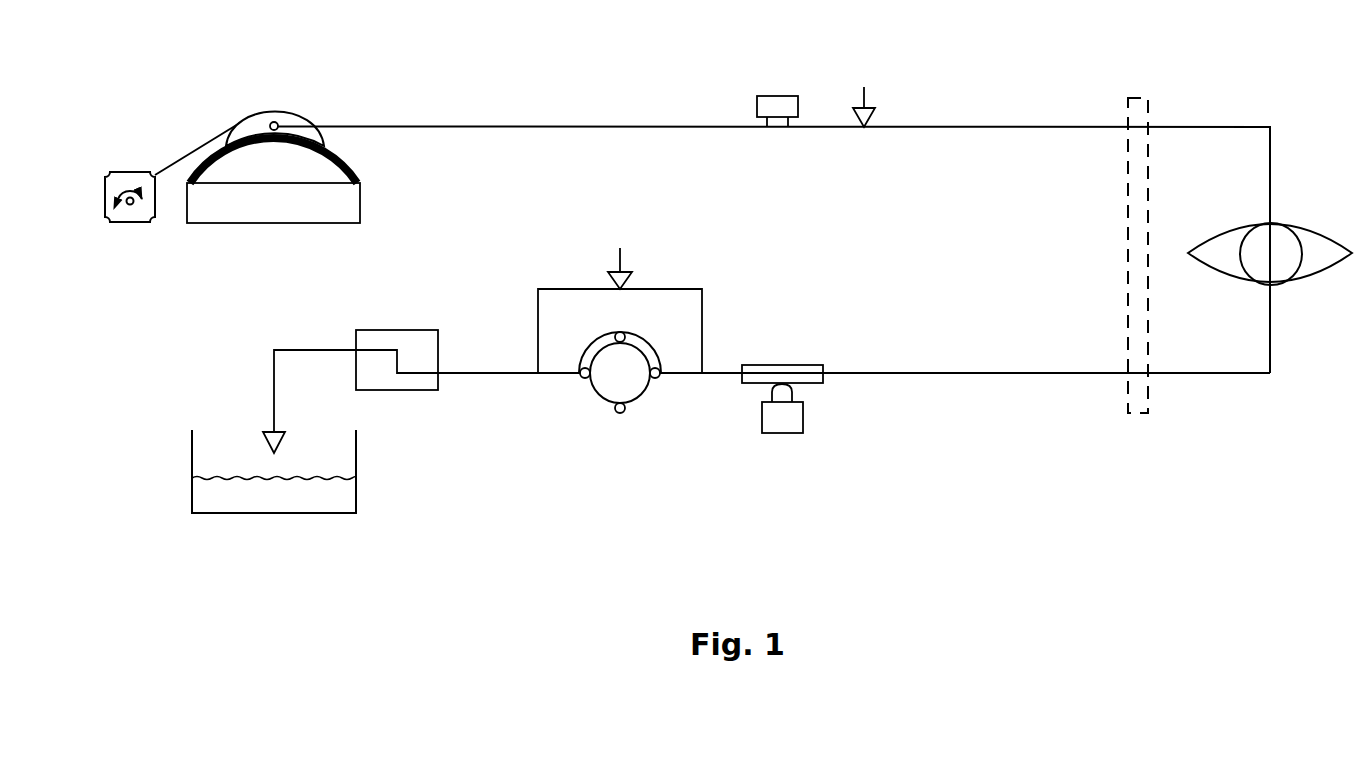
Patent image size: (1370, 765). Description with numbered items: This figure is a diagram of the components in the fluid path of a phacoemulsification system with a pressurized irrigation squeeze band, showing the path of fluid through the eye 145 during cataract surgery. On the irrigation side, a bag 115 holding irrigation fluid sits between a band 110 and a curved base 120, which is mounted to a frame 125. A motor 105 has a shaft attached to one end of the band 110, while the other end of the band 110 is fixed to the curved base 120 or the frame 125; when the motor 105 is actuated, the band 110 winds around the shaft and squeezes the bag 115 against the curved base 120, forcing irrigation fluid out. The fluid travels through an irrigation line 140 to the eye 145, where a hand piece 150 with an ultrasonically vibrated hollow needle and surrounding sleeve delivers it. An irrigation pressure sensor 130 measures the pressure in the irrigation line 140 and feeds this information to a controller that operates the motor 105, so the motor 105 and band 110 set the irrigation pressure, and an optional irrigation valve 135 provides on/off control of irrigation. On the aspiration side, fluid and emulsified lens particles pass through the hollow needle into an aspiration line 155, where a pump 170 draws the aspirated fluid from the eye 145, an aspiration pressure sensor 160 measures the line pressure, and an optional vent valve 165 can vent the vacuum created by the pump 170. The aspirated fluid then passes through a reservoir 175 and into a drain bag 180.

The motor 105 is at (127, 168).
The band 110 is at (207, 142).
The bag 115 is at (249, 120).
The curved base 120 is at (362, 173).
The frame 125 is at (228, 203).
The irrigation pressure sensor 130 is at (776, 95).
The irrigation valve 135 is at (866, 95).
The irrigation line 140 is at (1043, 125).
The eye 145 is at (1307, 280).
The hand piece 150 is at (1150, 97).
The aspiration line 155 is at (984, 376).
The aspiration pressure sensor 160 is at (806, 434).
The vent valve 165 is at (627, 250).
The pump 170 is at (614, 375).
The reservoir 175 is at (416, 328).
The drain bag 180 is at (358, 493).